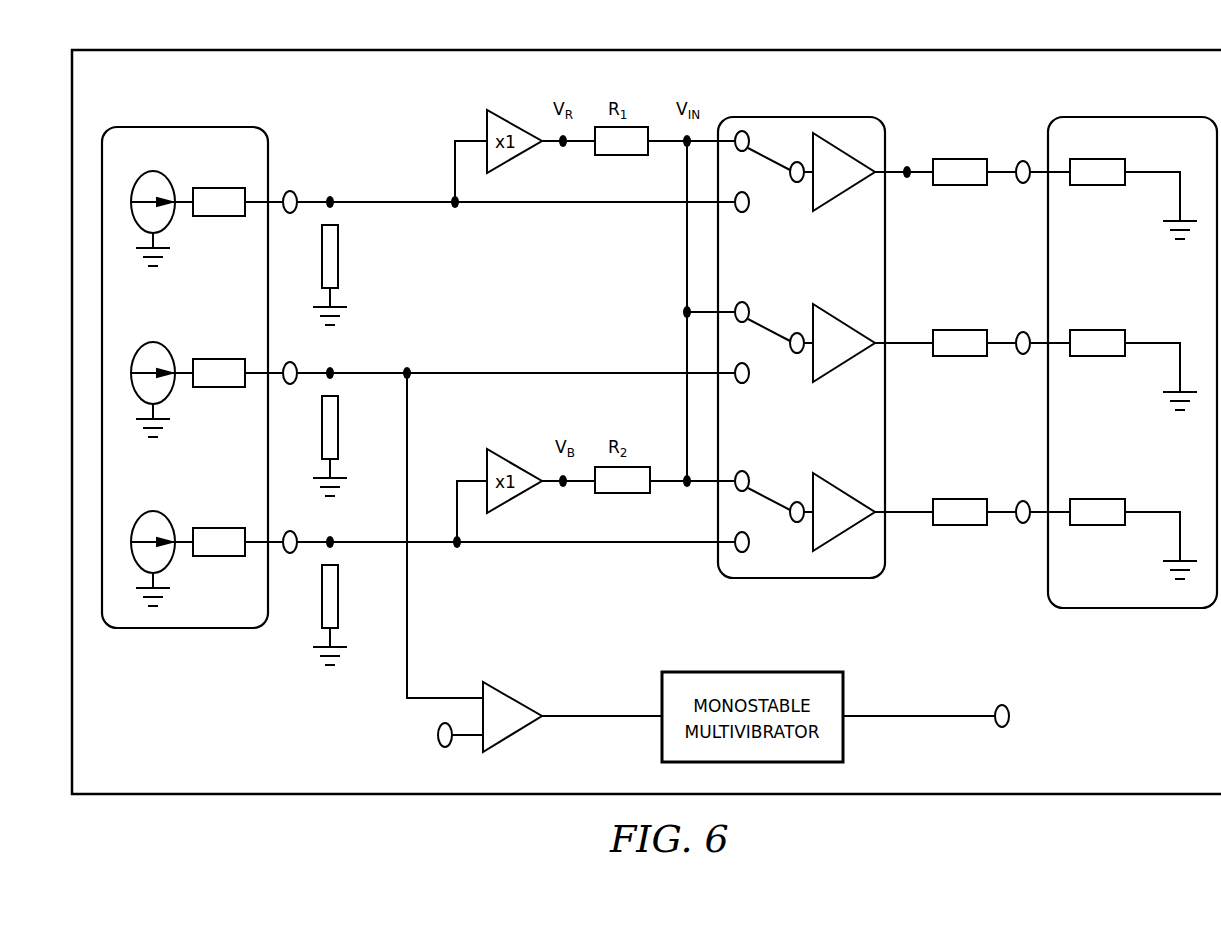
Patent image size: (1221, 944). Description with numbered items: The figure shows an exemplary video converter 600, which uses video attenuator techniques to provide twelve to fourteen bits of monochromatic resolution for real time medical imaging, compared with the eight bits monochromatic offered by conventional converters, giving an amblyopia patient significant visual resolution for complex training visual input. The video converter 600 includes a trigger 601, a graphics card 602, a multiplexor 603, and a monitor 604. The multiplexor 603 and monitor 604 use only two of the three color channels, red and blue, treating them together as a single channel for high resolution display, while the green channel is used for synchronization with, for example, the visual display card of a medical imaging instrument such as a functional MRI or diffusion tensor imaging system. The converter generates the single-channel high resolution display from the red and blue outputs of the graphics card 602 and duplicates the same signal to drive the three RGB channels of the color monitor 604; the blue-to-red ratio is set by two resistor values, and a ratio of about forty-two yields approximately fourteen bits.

The video converter 600 is at (493, 35).
The trigger 601 is at (1008, 697).
The graphics card 602 is at (262, 131).
The multiplexor 603 is at (882, 117).
The monitor 604 is at (1050, 117).